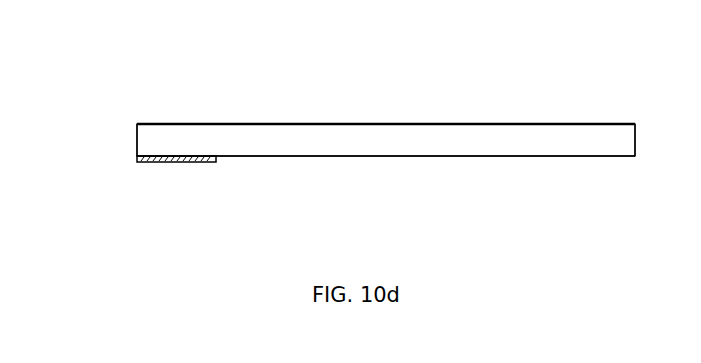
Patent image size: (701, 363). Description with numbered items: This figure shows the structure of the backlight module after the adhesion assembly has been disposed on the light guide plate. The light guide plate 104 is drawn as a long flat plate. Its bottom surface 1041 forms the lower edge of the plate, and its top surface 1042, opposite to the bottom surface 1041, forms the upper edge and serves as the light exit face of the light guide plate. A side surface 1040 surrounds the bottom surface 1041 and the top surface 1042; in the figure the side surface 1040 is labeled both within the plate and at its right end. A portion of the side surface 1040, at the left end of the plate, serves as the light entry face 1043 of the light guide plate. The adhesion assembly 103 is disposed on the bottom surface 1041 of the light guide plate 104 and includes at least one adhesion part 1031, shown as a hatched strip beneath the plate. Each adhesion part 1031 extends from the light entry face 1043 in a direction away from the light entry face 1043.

The light guide plate 104 is at (573, 133).
The side surface 1040 is at (293, 145).
The bottom surface 1041 is at (485, 155).
The top surface 1042 is at (400, 122).
The light entry face 1043 is at (137, 142).
The adhesion assembly 103 is at (148, 209).
The adhesion part 1031 is at (188, 163).